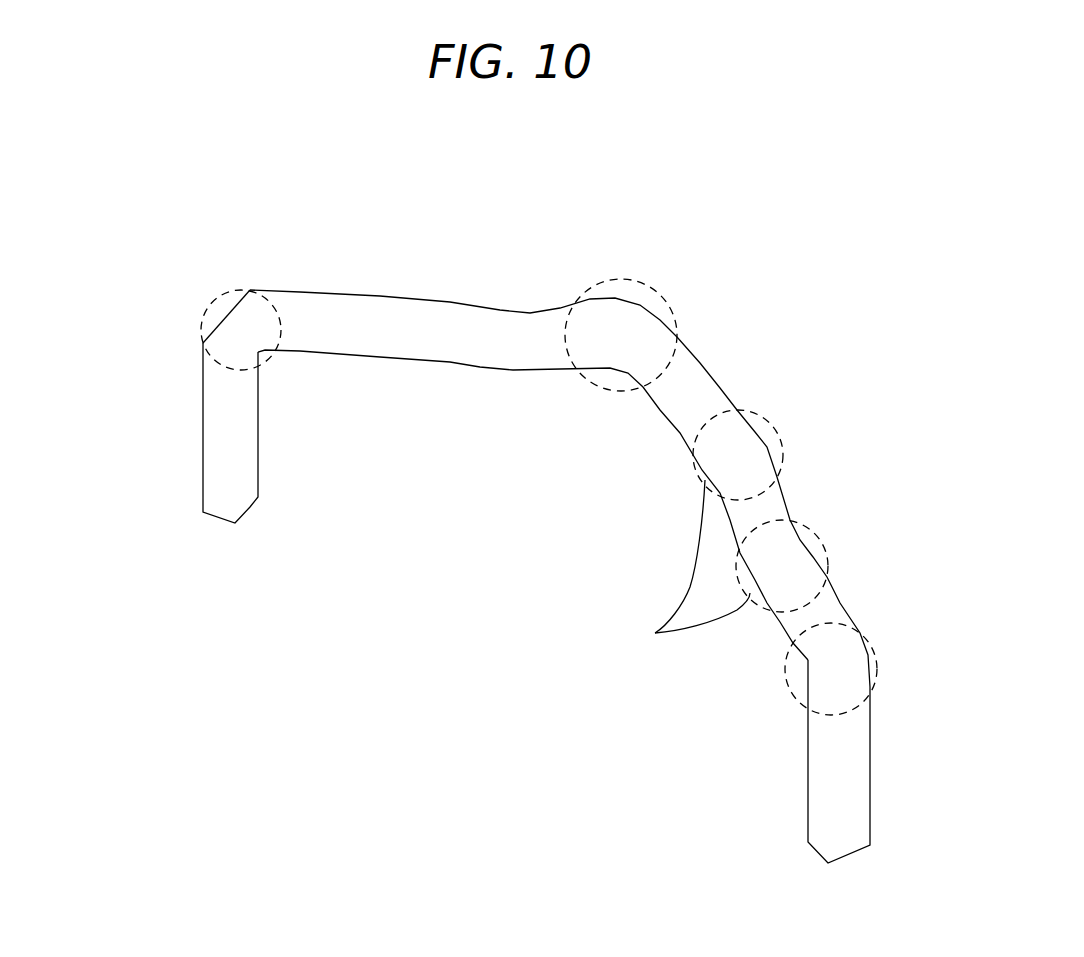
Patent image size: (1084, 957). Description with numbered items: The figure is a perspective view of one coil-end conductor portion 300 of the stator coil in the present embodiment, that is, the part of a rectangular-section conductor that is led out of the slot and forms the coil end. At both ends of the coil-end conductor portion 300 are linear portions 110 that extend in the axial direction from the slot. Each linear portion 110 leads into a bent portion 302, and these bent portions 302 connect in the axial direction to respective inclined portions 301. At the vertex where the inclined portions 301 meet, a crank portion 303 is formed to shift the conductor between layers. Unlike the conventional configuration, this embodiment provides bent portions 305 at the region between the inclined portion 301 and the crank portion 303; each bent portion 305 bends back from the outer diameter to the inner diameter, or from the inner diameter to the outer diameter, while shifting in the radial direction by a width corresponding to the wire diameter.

The coil-end conductor portion 300 is at (837, 341).
The inclined portion 301 is at (445, 302).
The bent portion 302 is at (228, 292).
The crank portion 303 is at (620, 280).
The bent portion 305 is at (655, 633).
The linear portion 110 is at (215, 457).